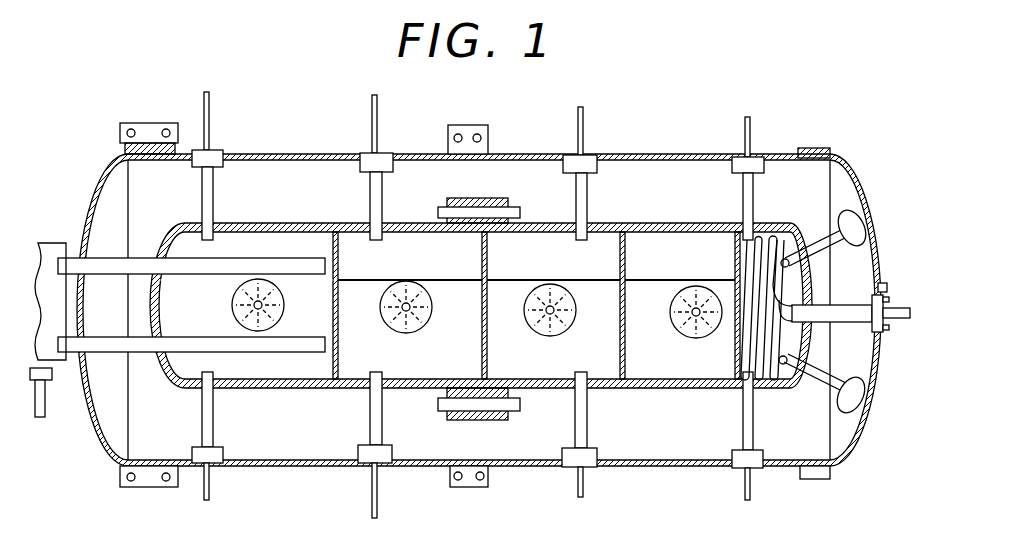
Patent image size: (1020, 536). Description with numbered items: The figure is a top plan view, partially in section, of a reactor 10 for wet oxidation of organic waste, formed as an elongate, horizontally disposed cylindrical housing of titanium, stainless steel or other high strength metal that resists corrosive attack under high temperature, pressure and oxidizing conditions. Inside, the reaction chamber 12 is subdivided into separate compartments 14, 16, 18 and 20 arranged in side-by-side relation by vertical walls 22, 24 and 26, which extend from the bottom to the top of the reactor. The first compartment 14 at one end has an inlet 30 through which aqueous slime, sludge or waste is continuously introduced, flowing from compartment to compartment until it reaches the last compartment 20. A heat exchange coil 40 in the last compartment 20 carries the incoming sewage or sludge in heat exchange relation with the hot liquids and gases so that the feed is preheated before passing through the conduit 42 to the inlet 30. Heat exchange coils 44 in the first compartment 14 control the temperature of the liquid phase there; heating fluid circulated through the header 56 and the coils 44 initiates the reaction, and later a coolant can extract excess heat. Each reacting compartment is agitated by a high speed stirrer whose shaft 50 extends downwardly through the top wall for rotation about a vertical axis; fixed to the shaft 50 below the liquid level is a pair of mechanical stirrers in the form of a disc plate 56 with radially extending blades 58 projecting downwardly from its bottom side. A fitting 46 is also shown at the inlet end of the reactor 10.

The reactor 10 is at (178, 224).
The reaction chamber 12 is at (540, 240).
The compartment 14 is at (220, 323).
The compartment 16 is at (421, 364).
The compartment 18 is at (534, 365).
The compartment 20 is at (671, 365).
The vertical wall 22 is at (338, 262).
The vertical wall 24 is at (488, 262).
The vertical wall 26 is at (626, 262).
The inlet 30 is at (191, 276).
The heat exchange coil 40 is at (832, 343).
The conduit 42 is at (461, 283).
The heat exchange coils 44 is at (266, 358).
The inlet fitting 46 is at (58, 360).
The shaft 50 is at (423, 312).
The disc plate 56 is at (283, 304).
The blades 58 is at (284, 313).